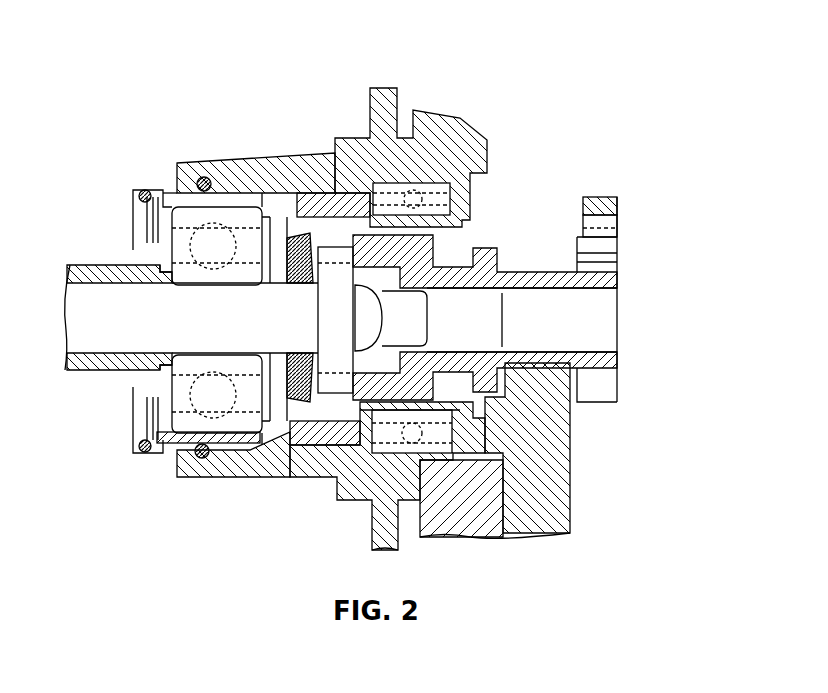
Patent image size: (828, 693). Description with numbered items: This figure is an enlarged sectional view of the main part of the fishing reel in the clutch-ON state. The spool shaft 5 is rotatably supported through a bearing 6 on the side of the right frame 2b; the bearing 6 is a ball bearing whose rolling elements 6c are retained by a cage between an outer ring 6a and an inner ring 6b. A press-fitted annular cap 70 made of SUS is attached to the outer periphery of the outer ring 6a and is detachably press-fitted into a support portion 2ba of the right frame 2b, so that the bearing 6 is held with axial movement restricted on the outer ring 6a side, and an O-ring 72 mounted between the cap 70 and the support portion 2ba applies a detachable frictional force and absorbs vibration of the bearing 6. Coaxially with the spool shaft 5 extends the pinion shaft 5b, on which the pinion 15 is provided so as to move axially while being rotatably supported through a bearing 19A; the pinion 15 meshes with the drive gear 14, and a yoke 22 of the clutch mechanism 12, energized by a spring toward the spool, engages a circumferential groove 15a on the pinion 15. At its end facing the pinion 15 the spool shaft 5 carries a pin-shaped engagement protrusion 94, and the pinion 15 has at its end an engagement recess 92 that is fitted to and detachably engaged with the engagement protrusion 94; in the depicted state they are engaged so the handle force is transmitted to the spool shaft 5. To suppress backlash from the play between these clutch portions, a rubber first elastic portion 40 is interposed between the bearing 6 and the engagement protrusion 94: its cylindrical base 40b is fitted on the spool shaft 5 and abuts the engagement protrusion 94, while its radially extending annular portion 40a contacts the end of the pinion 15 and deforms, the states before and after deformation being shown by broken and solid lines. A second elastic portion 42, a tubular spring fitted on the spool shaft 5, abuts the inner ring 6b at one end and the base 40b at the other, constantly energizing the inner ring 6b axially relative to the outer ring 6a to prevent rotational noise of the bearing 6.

The right frame 2b is at (382, 90).
The support portion 2ba is at (205, 180).
The spool shaft 5 is at (115, 303).
The pinion shaft 5b is at (600, 303).
The bearing 6 is at (214, 236).
The outer ring 6a is at (152, 192).
The inner ring 6b is at (173, 283).
The rolling elements 6c is at (158, 452).
The clutch mechanism 12 is at (582, 452).
The drive gear 14 is at (603, 200).
The pinion 15 is at (603, 388).
The circumferential groove 15a is at (540, 272).
The bearing 19A is at (418, 196).
The yoke 22 is at (548, 410).
The first elastic portion 40 is at (268, 398).
The radially extending annular portion 40a is at (298, 258).
The base 40b is at (292, 400).
The second elastic portion 42 is at (278, 268).
The cap 70 is at (140, 188).
The O-ring 72 is at (175, 452).
The engagement recess 92 is at (315, 205).
The engagement protrusion 94 is at (310, 445).